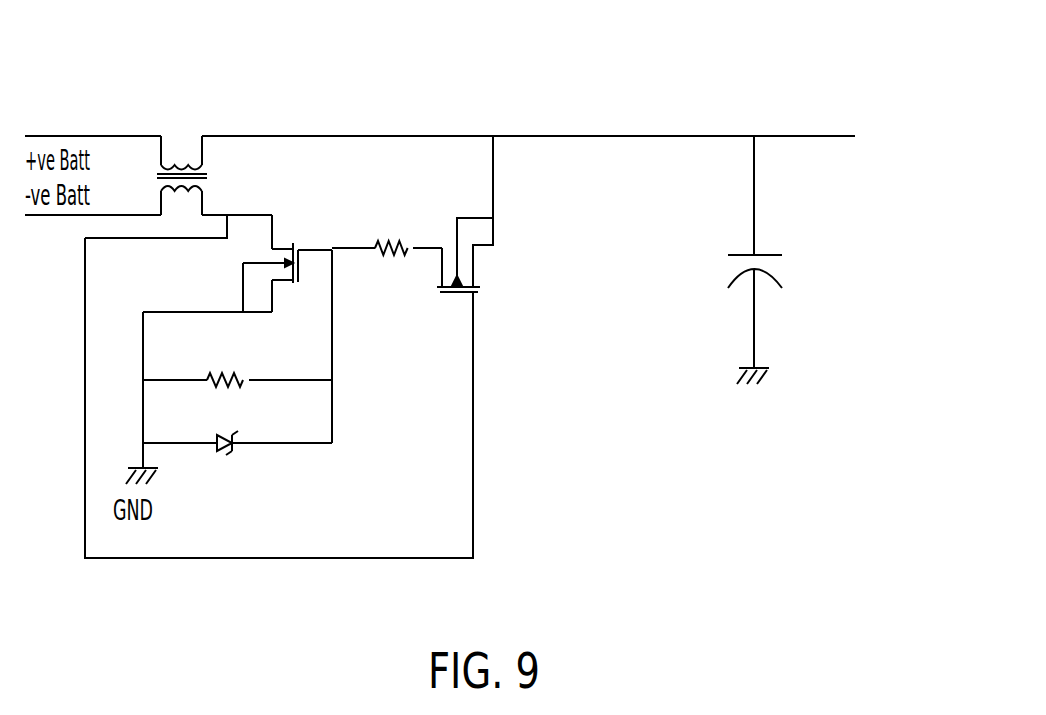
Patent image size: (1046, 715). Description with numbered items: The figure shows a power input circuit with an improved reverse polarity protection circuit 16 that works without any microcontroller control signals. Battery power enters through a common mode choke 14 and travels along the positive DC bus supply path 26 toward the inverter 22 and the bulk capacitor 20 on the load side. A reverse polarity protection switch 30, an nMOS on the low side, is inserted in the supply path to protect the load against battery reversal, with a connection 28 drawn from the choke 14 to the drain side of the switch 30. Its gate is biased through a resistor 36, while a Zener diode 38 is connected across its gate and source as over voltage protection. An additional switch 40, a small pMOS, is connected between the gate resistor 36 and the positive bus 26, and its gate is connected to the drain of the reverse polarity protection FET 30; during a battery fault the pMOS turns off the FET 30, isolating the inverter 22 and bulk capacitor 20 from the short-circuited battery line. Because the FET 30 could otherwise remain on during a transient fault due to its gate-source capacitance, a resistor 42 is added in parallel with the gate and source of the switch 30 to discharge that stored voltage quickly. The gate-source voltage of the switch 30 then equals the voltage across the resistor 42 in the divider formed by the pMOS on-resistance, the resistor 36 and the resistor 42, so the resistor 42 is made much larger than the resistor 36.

The common mode choke 14 is at (170, 165).
The DC bus supply path 26 is at (232, 136).
The reverse polarity protection circuit 16 is at (467, 98).
The inverter 22 is at (844, 151).
The bulk capacitor 20 is at (765, 253).
The connection node wire 28 is at (213, 216).
The switch 30 is at (299, 268).
The resistor 36 is at (395, 246).
The switch 40 is at (452, 290).
The resistor 42 is at (250, 376).
The Zener diode 38 is at (222, 450).